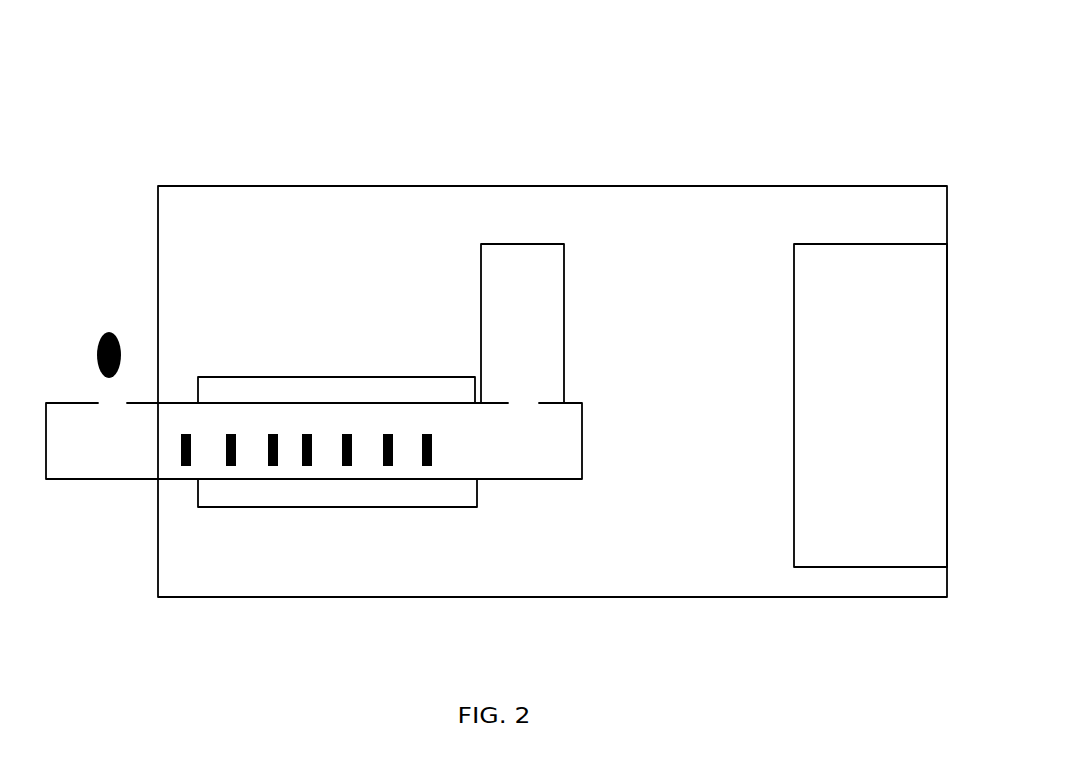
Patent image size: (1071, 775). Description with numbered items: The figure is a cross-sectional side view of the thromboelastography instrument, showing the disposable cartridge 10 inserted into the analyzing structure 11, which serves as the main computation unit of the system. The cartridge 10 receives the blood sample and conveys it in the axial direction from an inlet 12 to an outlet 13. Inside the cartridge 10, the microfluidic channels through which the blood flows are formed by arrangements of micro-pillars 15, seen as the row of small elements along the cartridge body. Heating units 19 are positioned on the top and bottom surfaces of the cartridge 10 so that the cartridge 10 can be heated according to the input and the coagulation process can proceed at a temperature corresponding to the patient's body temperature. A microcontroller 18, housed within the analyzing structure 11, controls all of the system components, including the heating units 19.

The cartridge 10 is at (90, 479).
The analyzing structure 11 is at (652, 146).
The inlet 12 is at (118, 400).
The outlet 13 is at (523, 402).
The micro-pillar 15 is at (193, 410).
The microcontroller 18 is at (855, 554).
The heating units 19 is at (403, 383).